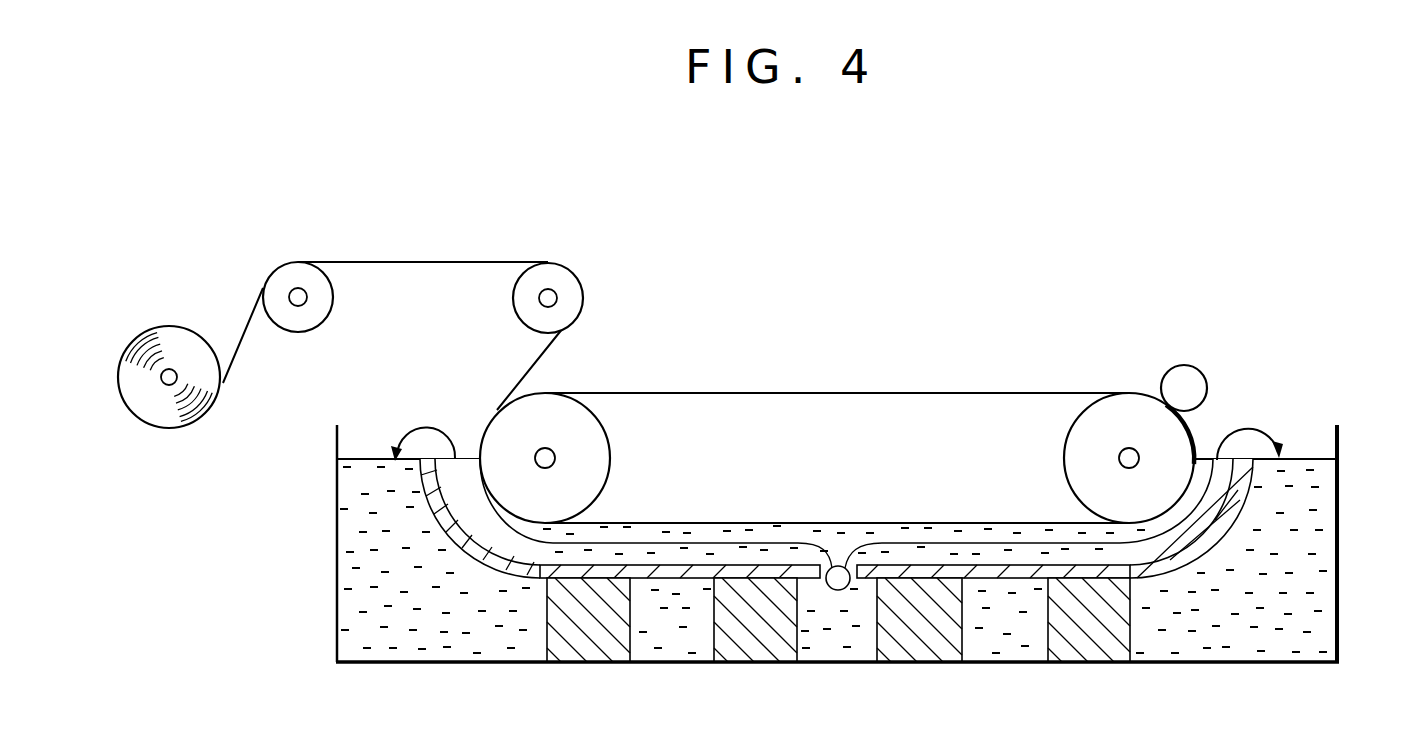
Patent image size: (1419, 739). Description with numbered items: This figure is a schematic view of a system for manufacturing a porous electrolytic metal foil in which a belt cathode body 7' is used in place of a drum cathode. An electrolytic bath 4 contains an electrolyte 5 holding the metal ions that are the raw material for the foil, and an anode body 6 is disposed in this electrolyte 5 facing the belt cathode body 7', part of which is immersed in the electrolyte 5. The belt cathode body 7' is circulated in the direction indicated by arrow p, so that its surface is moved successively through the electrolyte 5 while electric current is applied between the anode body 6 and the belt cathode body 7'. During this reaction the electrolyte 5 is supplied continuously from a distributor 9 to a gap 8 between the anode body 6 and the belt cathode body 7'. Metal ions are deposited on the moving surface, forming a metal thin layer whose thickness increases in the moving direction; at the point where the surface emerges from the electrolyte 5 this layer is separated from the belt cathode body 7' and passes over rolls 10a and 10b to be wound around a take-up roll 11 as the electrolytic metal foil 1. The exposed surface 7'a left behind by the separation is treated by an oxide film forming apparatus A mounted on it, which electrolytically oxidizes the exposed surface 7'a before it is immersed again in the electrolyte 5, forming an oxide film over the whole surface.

The electrolytic metal foil 1 is at (423, 262).
The electrolytic bath 4 is at (1338, 582).
The electrolyte 5 is at (1308, 515).
The anode body 6 is at (507, 567).
The belt cathode body 7' is at (837, 399).
The exposed surface 7'a is at (837, 363).
The gap 8 is at (1083, 556).
The distributor 9 is at (838, 591).
The roll 10a is at (298, 270).
The roll 10b is at (553, 268).
The take-up roll 11 is at (169, 330).
The oxide film forming apparatus A is at (1185, 365).
The arrow indicating direction of circulation p is at (793, 377).